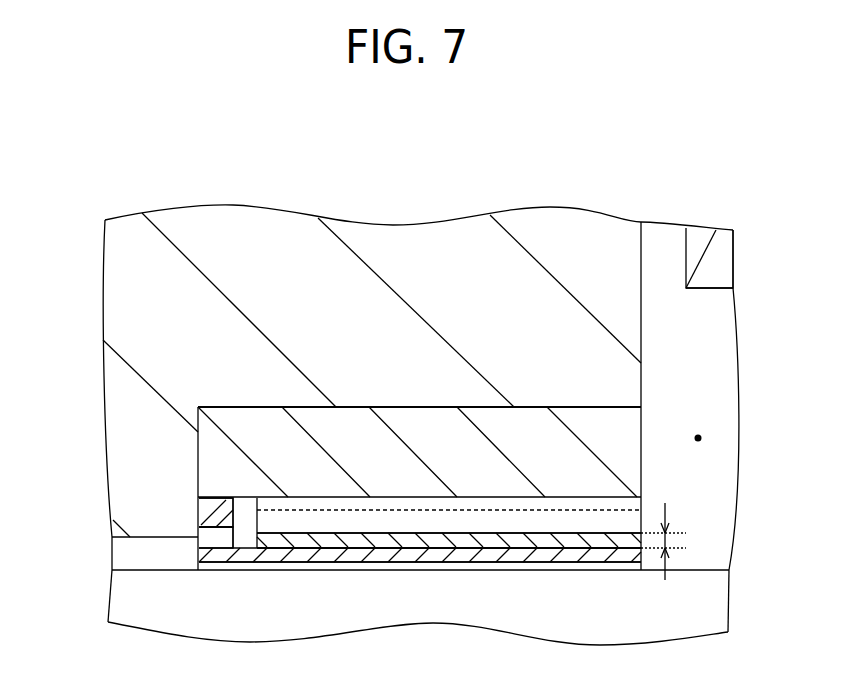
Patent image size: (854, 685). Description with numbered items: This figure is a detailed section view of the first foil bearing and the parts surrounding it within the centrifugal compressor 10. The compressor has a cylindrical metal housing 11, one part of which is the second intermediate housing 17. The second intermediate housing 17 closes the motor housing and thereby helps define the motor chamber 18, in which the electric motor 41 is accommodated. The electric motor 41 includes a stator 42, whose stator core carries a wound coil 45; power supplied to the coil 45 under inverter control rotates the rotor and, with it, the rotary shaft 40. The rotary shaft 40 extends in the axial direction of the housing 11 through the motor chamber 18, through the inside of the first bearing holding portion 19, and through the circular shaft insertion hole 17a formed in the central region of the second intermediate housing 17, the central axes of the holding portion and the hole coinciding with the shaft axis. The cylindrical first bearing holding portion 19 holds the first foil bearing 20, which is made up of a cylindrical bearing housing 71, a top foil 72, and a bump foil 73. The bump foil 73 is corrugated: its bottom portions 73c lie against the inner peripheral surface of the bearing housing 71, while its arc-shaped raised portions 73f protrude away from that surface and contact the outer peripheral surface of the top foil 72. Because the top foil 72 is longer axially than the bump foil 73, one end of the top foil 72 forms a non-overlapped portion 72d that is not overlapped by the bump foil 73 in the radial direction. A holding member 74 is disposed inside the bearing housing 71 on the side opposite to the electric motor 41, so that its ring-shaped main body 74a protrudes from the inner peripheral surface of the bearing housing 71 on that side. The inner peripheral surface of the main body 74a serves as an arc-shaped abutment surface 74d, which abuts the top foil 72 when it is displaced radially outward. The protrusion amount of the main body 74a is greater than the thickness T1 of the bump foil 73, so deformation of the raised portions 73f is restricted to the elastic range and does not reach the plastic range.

The centrifugal compressor 10 is at (112, 200).
The housing 11 is at (172, 222).
The second intermediate housing 17 is at (212, 207).
The shaft insertion hole 17a is at (112, 551).
The motor chamber 18 is at (702, 438).
The first bearing holding portion 19 is at (344, 406).
The first foil bearing 20 is at (582, 400).
The rotary shaft 40 is at (245, 627).
The electric motor 41 is at (681, 249).
The stator 42 is at (722, 289).
The coil 45 is at (707, 289).
The bearing housing 71 is at (422, 417).
The top foil 72 is at (390, 557).
The non-overlapped portion 72d is at (213, 563).
The bump foil 73 is at (481, 541).
The bottom portions 73c is at (522, 534).
The raised portions 73f is at (419, 549).
The holding member 74 is at (199, 512).
The main body 74a is at (228, 548).
The abutment surface 74d is at (199, 540).
The thickness of the bump foil T1 is at (667, 540).